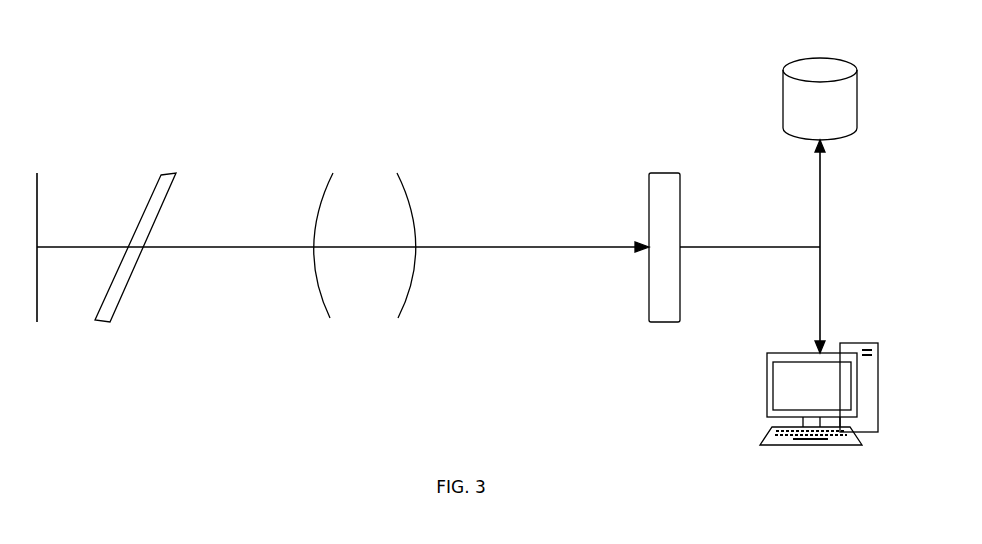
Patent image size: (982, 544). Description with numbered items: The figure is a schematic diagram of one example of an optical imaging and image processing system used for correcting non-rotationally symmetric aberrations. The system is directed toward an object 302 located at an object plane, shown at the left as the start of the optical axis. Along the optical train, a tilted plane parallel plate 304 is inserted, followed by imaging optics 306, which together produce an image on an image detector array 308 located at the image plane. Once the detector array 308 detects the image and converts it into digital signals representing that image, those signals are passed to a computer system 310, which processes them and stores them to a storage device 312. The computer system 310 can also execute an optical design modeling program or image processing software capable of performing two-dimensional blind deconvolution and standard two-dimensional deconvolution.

The object 302 is at (37, 235).
The tilted plane parallel plate 304 is at (140, 235).
The imaging optics 306 is at (365, 231).
The image detector array 308 is at (665, 231).
The computer system 310 is at (819, 410).
The storage device 312 is at (820, 86).